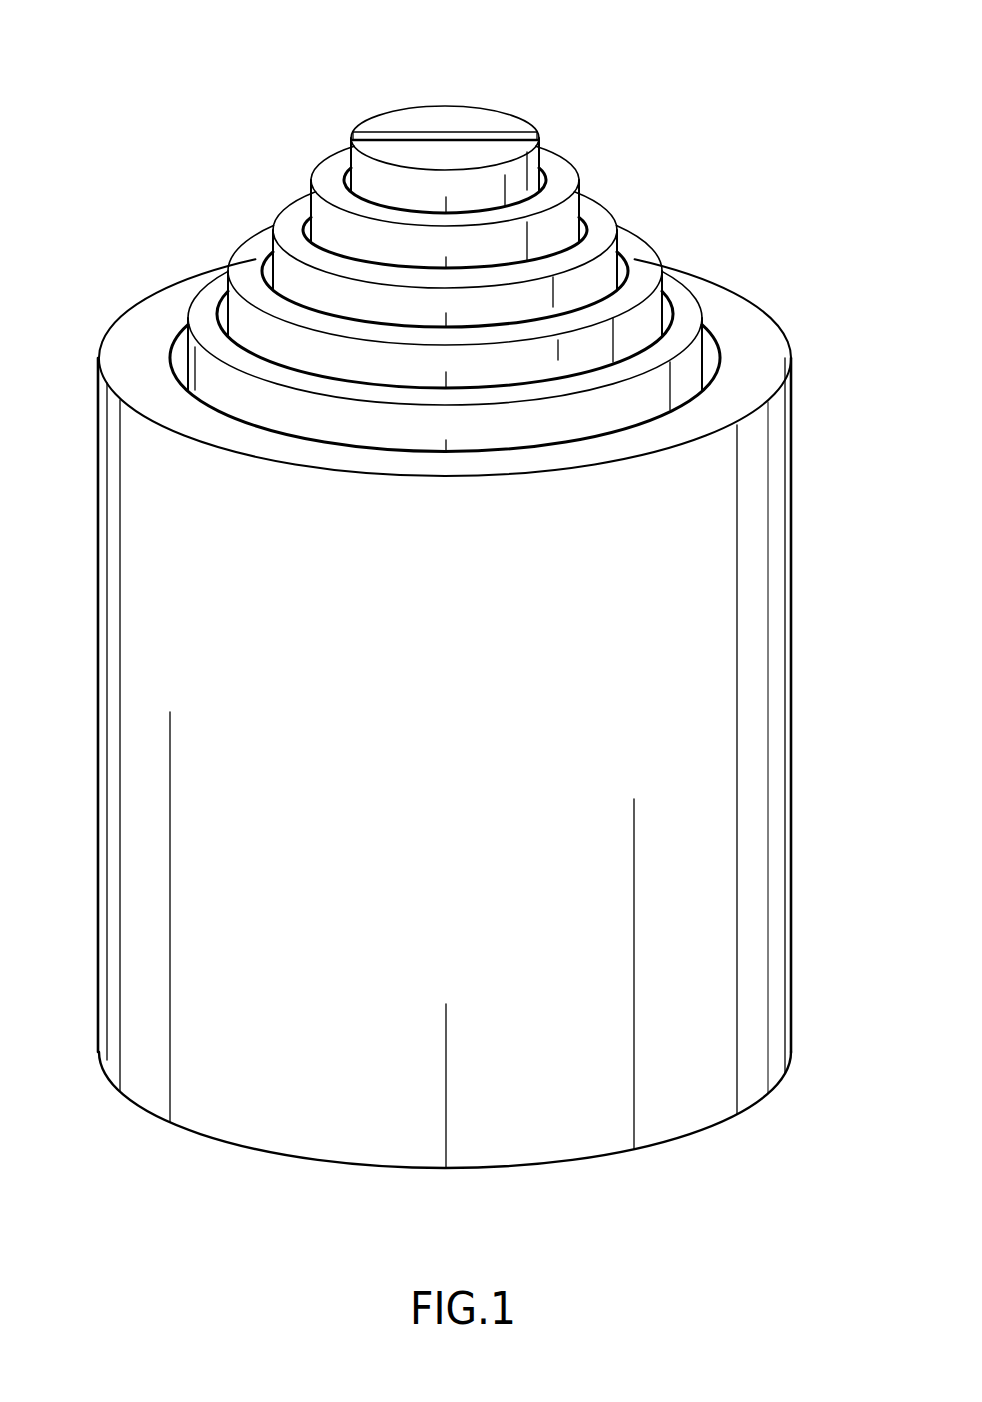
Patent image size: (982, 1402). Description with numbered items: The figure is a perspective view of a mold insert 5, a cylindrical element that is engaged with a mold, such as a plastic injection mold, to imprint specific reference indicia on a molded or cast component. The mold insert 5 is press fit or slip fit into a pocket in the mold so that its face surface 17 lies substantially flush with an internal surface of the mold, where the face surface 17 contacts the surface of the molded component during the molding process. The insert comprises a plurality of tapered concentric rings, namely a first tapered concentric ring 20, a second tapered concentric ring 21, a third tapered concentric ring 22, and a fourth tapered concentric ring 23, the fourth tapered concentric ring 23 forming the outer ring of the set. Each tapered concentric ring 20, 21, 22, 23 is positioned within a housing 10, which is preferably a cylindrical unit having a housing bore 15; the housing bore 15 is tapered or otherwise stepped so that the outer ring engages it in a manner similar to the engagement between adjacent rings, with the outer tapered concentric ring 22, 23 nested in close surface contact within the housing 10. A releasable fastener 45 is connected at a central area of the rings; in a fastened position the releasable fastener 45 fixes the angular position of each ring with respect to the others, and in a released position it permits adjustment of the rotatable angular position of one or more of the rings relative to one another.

The mold insert 5 is at (295, 42).
The housing 10 is at (762, 638).
The housing bore 15 is at (175, 340).
The face surface 17 is at (330, 180).
The first tapered concentric ring 20 is at (550, 227).
The second tapered concentric ring 21 is at (592, 275).
The third tapered concentric ring 22 is at (638, 320).
The fourth tapered concentric ring 23 is at (680, 365).
The releasable fastener 45 is at (512, 177).